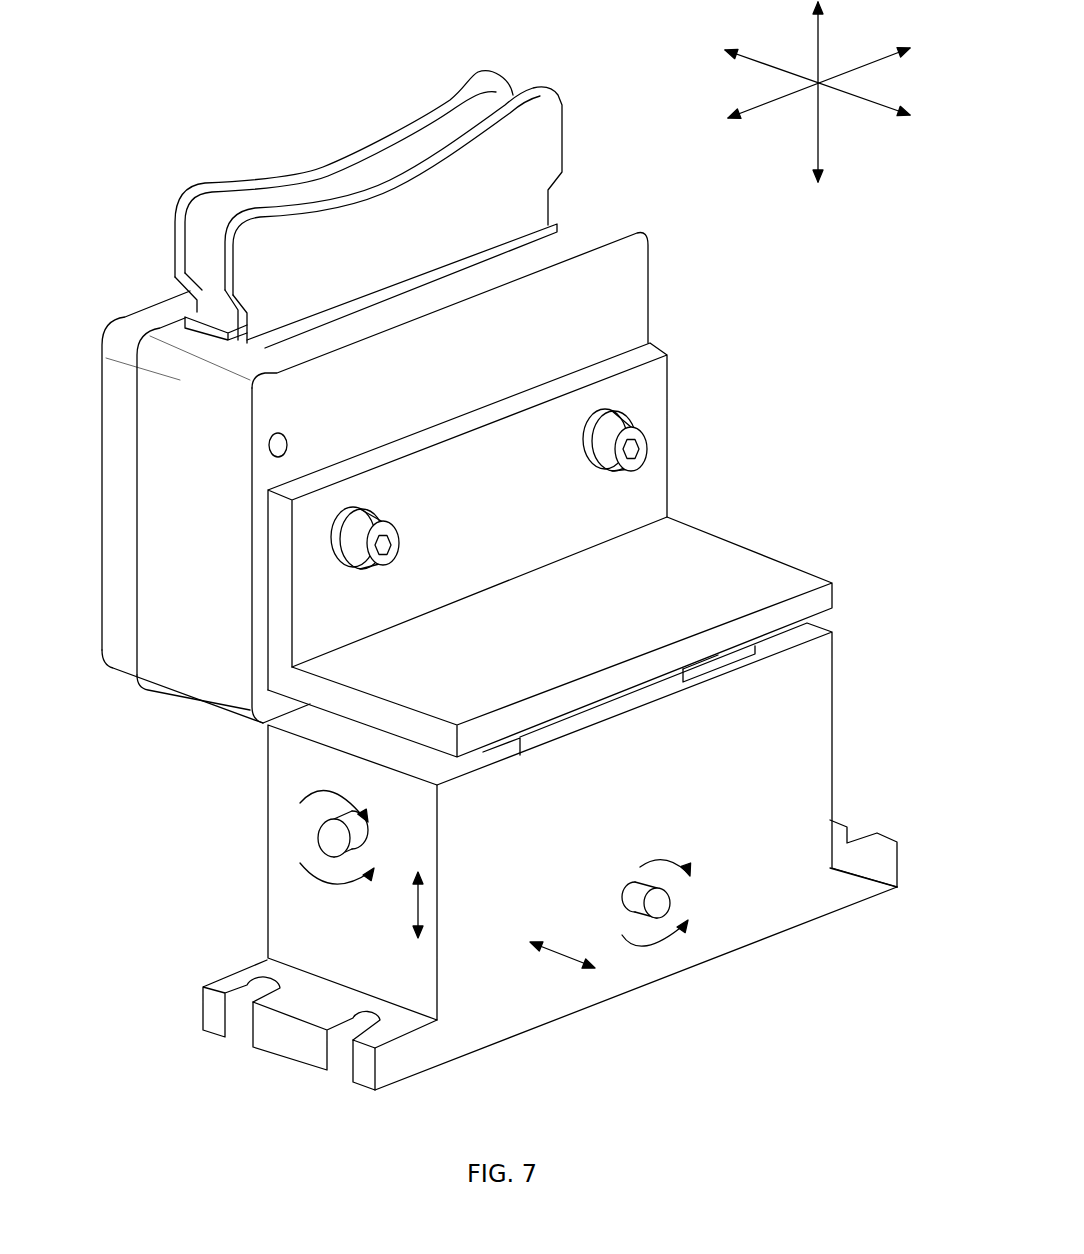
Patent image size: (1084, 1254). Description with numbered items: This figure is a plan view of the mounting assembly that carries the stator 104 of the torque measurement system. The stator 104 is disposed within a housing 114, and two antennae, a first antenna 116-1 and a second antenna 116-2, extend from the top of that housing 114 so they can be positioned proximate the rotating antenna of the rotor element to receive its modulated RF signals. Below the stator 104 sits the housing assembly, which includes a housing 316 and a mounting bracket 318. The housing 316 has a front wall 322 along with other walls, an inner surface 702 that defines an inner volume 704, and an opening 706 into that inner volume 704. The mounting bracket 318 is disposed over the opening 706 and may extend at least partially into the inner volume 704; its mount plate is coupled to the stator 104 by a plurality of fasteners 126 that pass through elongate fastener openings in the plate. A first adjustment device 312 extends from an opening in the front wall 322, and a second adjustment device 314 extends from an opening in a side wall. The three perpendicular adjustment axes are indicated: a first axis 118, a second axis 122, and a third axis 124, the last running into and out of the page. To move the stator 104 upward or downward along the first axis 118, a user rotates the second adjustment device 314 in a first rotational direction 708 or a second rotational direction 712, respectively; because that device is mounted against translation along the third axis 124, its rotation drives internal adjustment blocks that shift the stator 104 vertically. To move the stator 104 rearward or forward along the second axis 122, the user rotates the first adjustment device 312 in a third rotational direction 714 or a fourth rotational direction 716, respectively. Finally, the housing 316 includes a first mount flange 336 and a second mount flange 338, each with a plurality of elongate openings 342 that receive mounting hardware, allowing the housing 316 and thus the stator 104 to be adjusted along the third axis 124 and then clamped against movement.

The stator 104 is at (92, 460).
The housing 114 is at (645, 298).
The first antenna 116-1 is at (563, 150).
The second antenna 116-2 is at (430, 104).
The first axis 118 is at (818, 20).
The second axis 122 is at (880, 108).
The third axis 124 is at (870, 68).
The fasteners 126 is at (402, 542).
The mounting bracket 318 is at (692, 504).
The housing 316 is at (843, 727).
The front wall 322 is at (823, 653).
The inner surface 702 is at (732, 660).
The inner volume 704 is at (700, 672).
The opening 706 is at (514, 749).
The second adjustment device 314 is at (367, 836).
The first adjustment device 312 is at (628, 905).
The first rotational direction 708 is at (316, 797).
The second rotational direction 712 is at (340, 882).
The fourth rotational direction 716 is at (665, 854).
The third rotational direction 714 is at (660, 965).
The elongate openings 342 is at (232, 1010).
The second mount flange 338 is at (370, 1088).
The first mount flange 336 is at (858, 893).